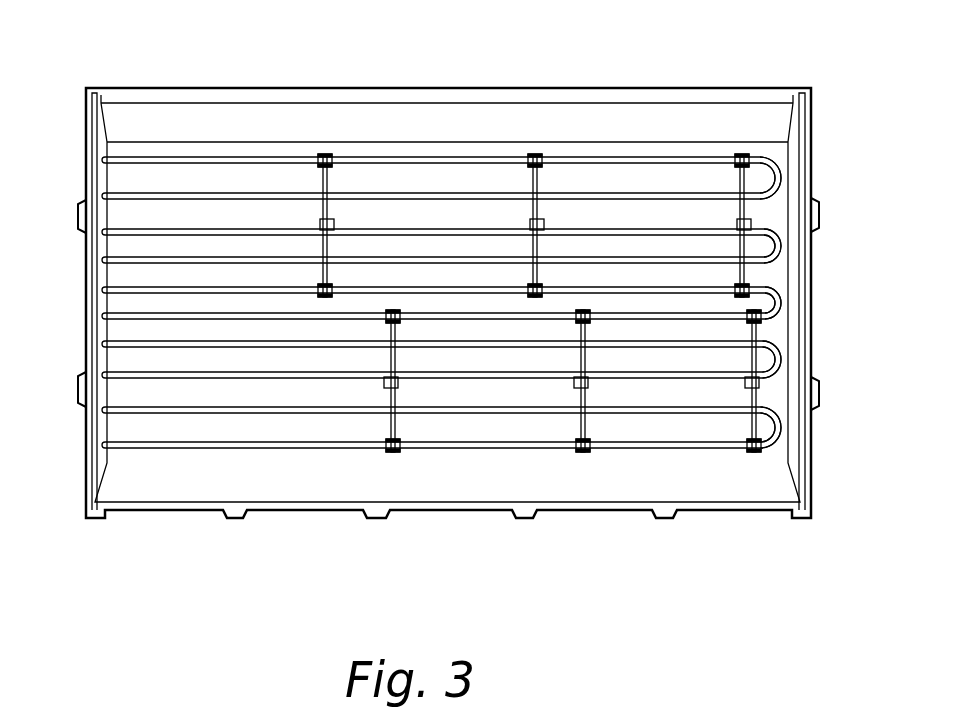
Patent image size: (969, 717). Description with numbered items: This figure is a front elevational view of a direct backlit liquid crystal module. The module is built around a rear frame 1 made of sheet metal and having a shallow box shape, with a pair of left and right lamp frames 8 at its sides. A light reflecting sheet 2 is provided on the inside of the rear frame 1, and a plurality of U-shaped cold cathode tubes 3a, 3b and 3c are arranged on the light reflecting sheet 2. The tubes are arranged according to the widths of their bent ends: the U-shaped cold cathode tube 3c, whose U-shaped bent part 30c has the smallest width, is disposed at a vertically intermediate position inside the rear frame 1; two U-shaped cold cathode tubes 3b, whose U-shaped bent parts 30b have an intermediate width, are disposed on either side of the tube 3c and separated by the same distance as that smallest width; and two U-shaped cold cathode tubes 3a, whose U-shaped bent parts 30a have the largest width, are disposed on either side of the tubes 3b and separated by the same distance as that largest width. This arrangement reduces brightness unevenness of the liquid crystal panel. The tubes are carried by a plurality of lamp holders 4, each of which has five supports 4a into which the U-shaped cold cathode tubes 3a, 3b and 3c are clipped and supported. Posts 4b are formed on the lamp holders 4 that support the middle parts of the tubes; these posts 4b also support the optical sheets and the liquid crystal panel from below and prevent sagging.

The rear frame 1 is at (450, 88).
The light reflecting sheet 2 is at (248, 175).
The U-shaped cold cathode tube 3a is at (165, 157).
The U-shaped cold cathode tube 3b is at (138, 229).
The U-shaped cold cathode tube 3c is at (138, 287).
The lamp holder 4 is at (329, 183).
The support 4a is at (535, 154).
The post 4b is at (329, 250).
The lamp frame 8 is at (93, 146).
The U-shaped bent part 30a is at (781, 182).
The U-shaped bent part 30b is at (784, 248).
The U-shaped bent part 30c is at (785, 303).